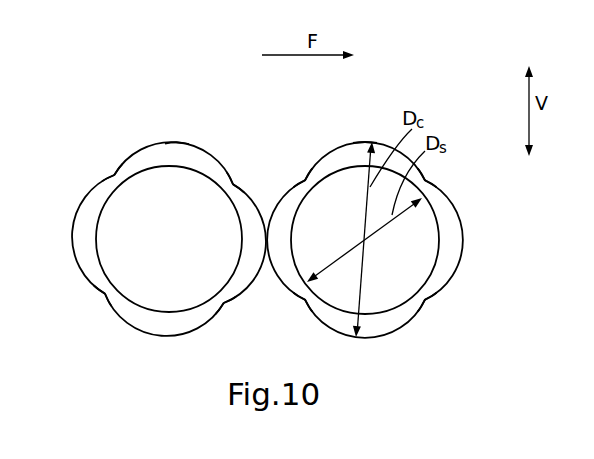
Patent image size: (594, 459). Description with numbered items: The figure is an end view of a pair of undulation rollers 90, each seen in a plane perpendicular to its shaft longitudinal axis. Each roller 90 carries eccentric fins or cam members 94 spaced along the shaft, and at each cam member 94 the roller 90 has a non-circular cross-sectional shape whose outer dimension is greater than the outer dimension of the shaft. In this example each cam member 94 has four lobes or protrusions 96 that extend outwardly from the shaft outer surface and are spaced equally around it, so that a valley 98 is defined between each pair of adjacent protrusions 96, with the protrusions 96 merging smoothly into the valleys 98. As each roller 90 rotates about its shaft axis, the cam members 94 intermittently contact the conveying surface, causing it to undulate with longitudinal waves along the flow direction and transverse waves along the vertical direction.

The roller 90 is at (130, 110).
The cam member 94 is at (172, 132).
The protrusion 96 is at (192, 147).
The valley 98 is at (114, 175).